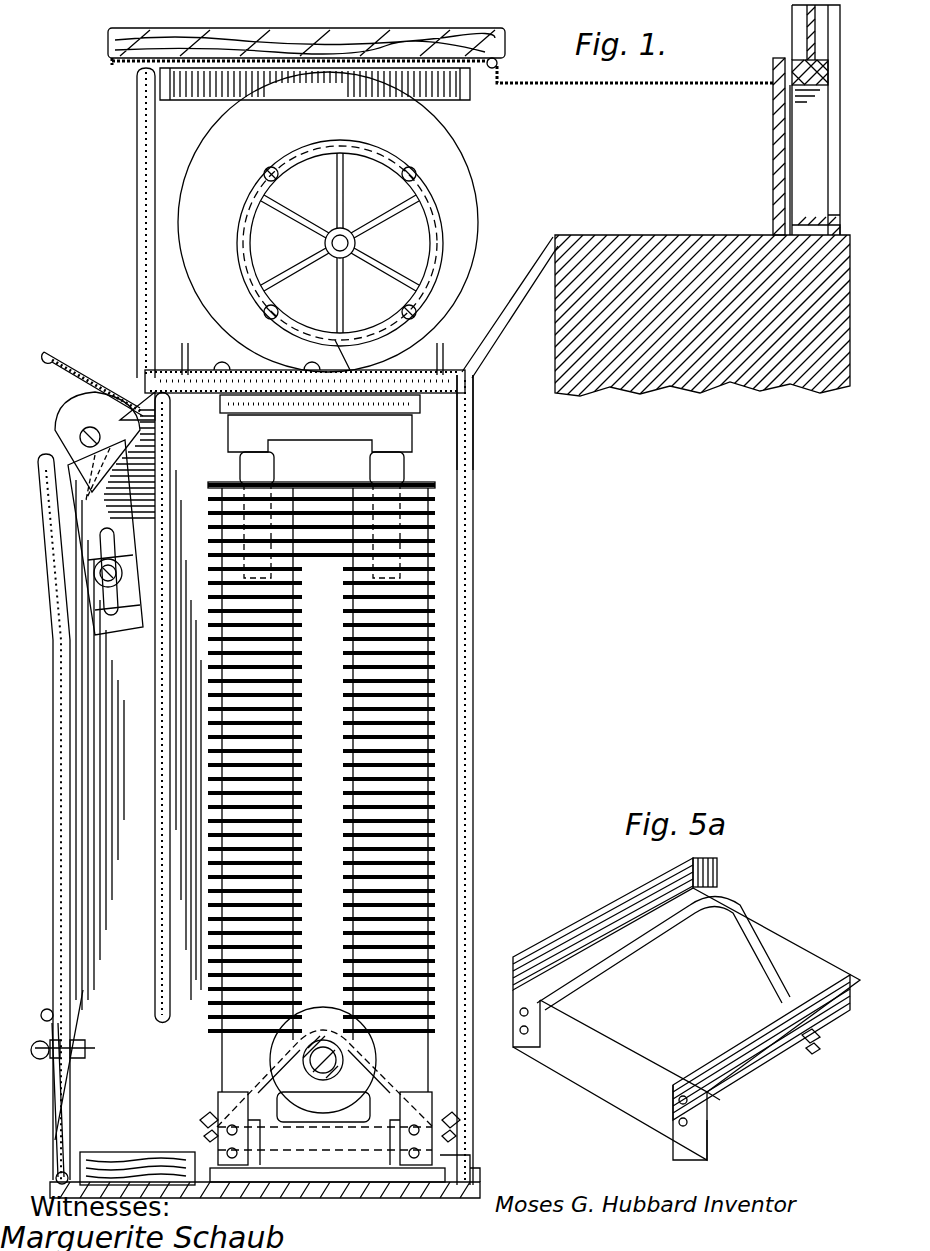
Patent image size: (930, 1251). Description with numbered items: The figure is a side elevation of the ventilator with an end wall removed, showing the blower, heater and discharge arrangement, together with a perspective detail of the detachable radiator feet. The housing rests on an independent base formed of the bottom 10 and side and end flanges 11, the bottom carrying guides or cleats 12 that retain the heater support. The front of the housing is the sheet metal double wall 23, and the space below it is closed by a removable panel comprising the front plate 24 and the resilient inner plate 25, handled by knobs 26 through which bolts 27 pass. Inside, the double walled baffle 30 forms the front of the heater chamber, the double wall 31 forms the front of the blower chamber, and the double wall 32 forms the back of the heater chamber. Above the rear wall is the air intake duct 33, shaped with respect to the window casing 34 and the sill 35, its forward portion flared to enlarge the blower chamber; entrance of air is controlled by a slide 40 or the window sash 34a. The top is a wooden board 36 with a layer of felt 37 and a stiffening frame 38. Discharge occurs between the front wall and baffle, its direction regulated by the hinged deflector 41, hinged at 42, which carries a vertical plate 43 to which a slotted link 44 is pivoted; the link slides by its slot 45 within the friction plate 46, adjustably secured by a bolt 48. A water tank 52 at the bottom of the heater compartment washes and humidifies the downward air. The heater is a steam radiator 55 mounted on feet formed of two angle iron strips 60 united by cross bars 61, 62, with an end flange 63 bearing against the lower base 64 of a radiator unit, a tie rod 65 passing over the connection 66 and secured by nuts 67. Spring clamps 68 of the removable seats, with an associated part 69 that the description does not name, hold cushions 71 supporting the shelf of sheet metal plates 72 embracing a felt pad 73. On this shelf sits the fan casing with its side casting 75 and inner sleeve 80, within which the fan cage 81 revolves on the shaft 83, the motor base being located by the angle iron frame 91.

In FIG. 1, the bottom 10 is at (325, 1198).
In FIG. 1, the side and end flanges 11 is at (478, 1182).
In FIG. 1, the guides or cleats 12 is at (330, 1170).
In FIG. 1, the double wall 23 is at (55, 805).
In FIG. 1, the front plate 24 is at (52, 1090).
In FIG. 1, the resilient inner plate 25 is at (80, 1040).
In FIG. 1, the knobs 26 is at (36, 1058).
In FIG. 1, the bolts 27 is at (88, 1050).
In FIG. 1, the double walled partition or baffle 30 is at (160, 770).
In FIG. 1, the double wall 31 is at (137, 224).
In FIG. 1, the double wall 32 is at (470, 625).
In FIG. 1, the air intake duct 33 is at (635, 116).
In FIG. 1, the window casing 34 is at (805, 172).
In FIG. 1, the window sash 34a is at (800, 62).
In FIG. 1, the sill 35 is at (560, 330).
In FIG. 1, the wooden board 36 is at (280, 28).
In FIG. 1, the layer of felt 37 is at (112, 62).
In FIG. 1, the rectangular frame 38 is at (455, 88).
In FIG. 1, the slide 40 is at (772, 70).
In FIG. 1, the hinged cover or deflector 41 is at (62, 378).
In FIG. 1, the hinge 42 is at (135, 408).
In FIG. 1, the vertical plate 43 is at (58, 408).
In FIG. 1, the intermediate plate or link 44 is at (88, 500).
In FIG. 1, the slot 45 is at (100, 562).
In FIG. 1, the friction plate 46 is at (95, 610).
In FIG. 1, the bolt 48 is at (100, 583).
In FIG. 1, the water tank 52 is at (92, 1165).
In FIG. 1, the steam heat radiator 55 is at (390, 875).
In FIG. 1, the angle iron strips 60 is at (220, 1112).
In FIG. 5A, the angle iron strips 60 is at (586, 945).
In FIG. 5A, the cross bar 61 is at (795, 972).
In FIG. 1, the cross bar 62 is at (292, 1165).
In FIG. 5A, the cross bar 62 is at (605, 1060).
In FIG. 5A, the end flange 63 is at (717, 872).
In FIG. 1, the lower base 64 is at (345, 1115).
In FIG. 1, the tie rod 65 is at (255, 1095).
In FIG. 5A, the tie rod 65 is at (750, 915).
In FIG. 1, the connection 66 is at (322, 1040).
In FIG. 1, the nuts 67 is at (205, 1130).
In FIG. 5A, the nuts 67 is at (810, 1050).
In FIG. 1, the spring clamps 68 is at (248, 474).
In FIG. 1, the bracket 69 is at (372, 418).
In FIG. 1, the cushion 71 is at (345, 400).
In FIG. 1, the sheet metal plates 72 is at (252, 368).
In FIG. 1, the felt pad 73 is at (450, 372).
In FIG. 1, the side casting 75 is at (455, 195).
In FIG. 1, the inner sleeve 80 is at (243, 262).
In FIG. 1, the fan cage 81 is at (337, 256).
In FIG. 1, the shaft 83 is at (345, 232).
In FIG. 1, the angle iron frame 91 is at (186, 358).